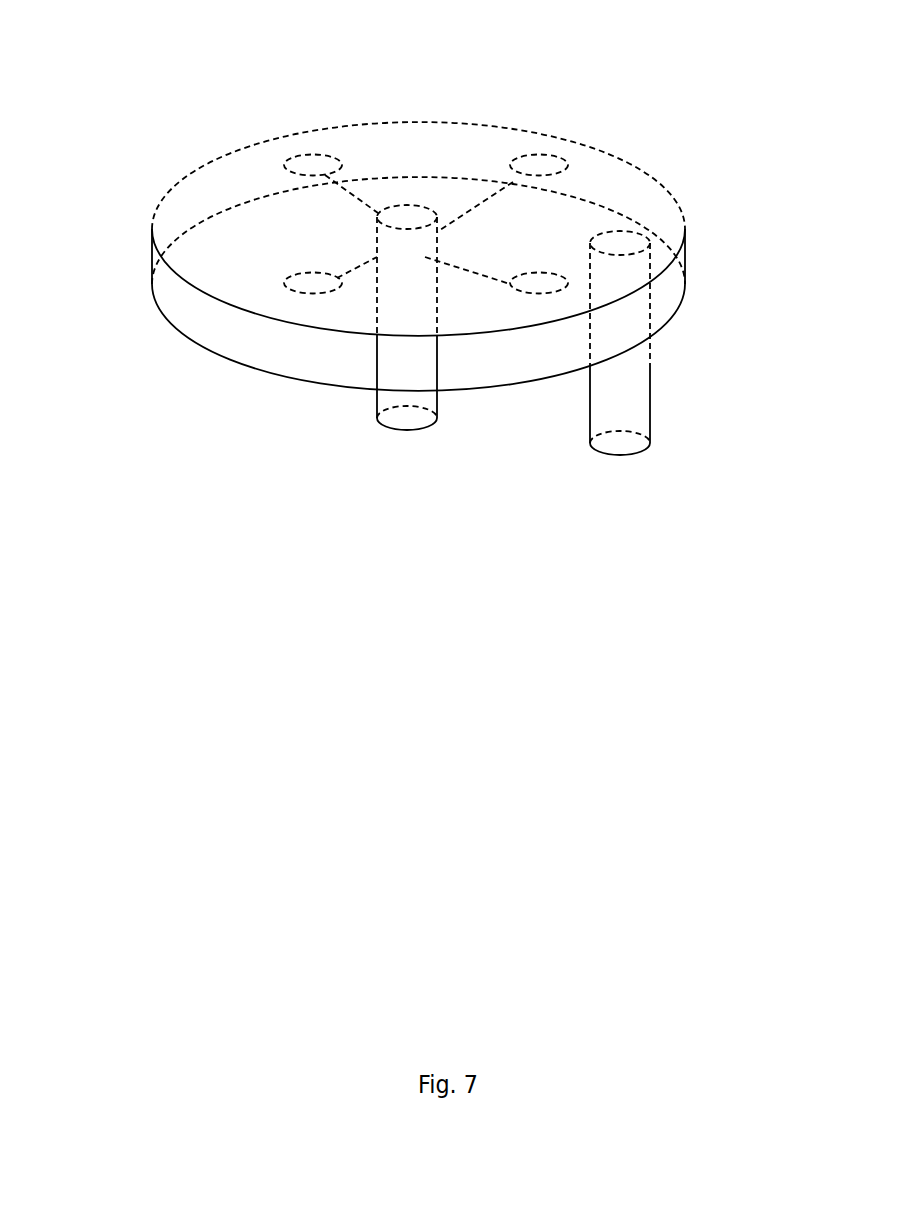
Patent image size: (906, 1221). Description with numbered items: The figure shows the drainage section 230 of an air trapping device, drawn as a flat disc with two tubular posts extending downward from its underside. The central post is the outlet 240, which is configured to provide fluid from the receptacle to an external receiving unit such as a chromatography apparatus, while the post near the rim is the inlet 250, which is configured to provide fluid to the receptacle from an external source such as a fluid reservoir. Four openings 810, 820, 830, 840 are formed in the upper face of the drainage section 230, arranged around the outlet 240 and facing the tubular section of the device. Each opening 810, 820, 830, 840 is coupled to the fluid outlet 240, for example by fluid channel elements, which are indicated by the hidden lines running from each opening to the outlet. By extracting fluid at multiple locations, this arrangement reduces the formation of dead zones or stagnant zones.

The drainage section 230 is at (177, 305).
The outlet 240 is at (363, 407).
The inlet 250 is at (620, 375).
The opening 810 is at (312, 165).
The opening 820 is at (540, 163).
The opening 830 is at (540, 283).
The opening 840 is at (300, 283).